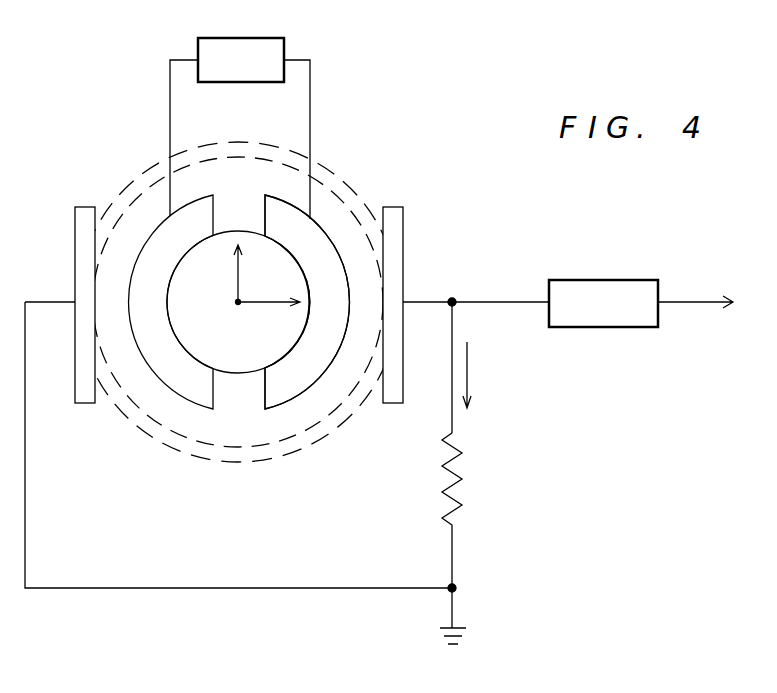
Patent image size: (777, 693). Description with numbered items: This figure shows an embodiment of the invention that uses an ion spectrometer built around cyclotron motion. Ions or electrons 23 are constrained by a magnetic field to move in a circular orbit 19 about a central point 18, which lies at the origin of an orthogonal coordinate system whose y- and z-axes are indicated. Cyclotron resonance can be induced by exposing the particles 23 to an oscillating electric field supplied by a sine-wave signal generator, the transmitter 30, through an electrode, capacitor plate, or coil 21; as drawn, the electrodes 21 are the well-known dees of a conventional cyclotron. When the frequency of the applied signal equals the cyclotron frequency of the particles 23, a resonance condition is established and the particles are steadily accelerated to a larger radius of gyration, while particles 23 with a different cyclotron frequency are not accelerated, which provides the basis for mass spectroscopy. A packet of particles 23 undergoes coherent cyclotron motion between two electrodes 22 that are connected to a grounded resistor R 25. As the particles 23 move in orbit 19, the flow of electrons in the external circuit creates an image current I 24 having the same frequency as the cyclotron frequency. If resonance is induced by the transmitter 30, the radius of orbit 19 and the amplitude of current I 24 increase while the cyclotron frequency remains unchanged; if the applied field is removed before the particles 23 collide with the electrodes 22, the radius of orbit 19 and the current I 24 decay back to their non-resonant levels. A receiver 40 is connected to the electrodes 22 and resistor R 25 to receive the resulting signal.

The point 18 is at (238, 312).
The circular orbit 19 is at (310, 263).
The electrode 21 is at (213, 399).
The electrodes 22 is at (348, 174).
The ions or electrons 23 is at (288, 352).
The image current I 24 is at (494, 370).
The grounded resistor R 25 is at (496, 487).
The transmitter 30 is at (284, 38).
The receiver 40 is at (594, 279).